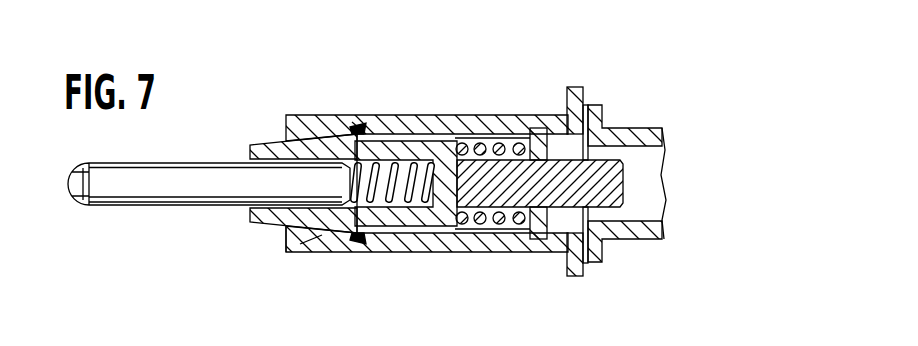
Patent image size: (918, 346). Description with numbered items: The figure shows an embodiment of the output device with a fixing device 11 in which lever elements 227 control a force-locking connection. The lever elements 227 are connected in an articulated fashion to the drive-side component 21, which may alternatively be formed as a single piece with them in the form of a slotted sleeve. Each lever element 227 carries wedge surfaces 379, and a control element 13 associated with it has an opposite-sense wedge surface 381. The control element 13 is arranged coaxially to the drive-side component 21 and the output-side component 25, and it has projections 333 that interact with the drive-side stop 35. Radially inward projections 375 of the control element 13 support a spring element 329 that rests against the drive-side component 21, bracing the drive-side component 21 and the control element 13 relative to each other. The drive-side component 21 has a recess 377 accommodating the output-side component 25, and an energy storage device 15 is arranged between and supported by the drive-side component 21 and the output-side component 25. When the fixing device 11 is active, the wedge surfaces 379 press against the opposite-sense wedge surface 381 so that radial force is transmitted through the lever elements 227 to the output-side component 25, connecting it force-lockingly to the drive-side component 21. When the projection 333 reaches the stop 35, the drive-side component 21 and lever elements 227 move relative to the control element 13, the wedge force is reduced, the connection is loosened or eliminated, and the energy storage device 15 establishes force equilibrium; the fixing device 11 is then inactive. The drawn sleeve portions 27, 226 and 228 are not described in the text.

The fixing device 11 is at (318, 240).
The control element 13 is at (493, 124).
The energy storage device 15 is at (413, 168).
The drive-side component 21 is at (620, 168).
The output-side component 25 is at (130, 190).
The insulating sleeve 27 is at (254, 224).
The drive-side stop 35 is at (593, 105).
The latch arm 226 is at (358, 124).
The lever element 227 is at (267, 150).
The latch tip 228 is at (363, 128).
The spring element 329 is at (478, 232).
The projection 333 is at (582, 278).
The radially inward projection 375 is at (538, 245).
The recess 377 is at (385, 230).
The wedge surface 379 is at (345, 236).
The opposite-sense wedge surface 381 is at (294, 236).